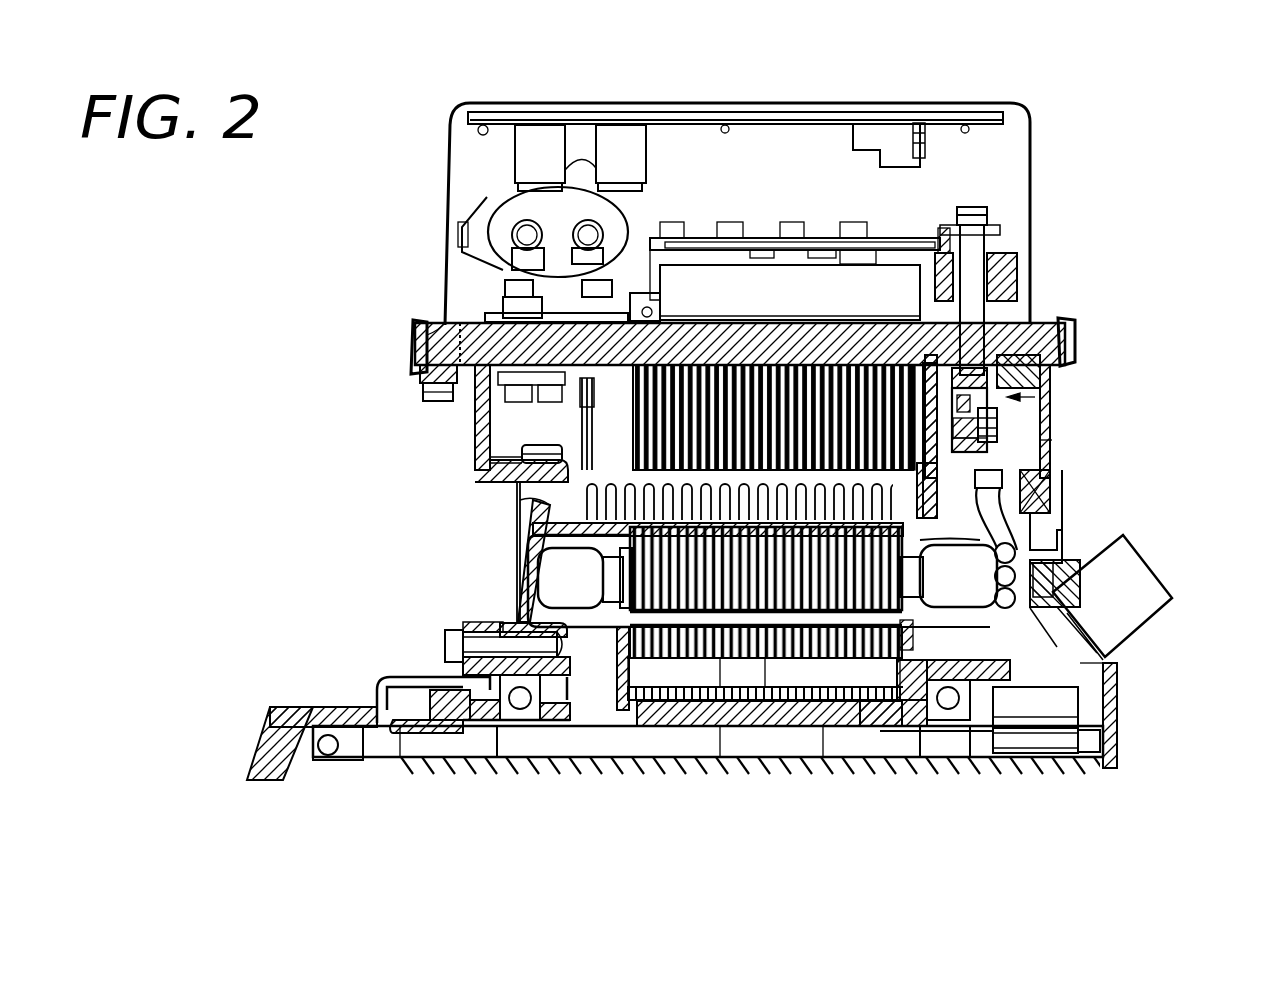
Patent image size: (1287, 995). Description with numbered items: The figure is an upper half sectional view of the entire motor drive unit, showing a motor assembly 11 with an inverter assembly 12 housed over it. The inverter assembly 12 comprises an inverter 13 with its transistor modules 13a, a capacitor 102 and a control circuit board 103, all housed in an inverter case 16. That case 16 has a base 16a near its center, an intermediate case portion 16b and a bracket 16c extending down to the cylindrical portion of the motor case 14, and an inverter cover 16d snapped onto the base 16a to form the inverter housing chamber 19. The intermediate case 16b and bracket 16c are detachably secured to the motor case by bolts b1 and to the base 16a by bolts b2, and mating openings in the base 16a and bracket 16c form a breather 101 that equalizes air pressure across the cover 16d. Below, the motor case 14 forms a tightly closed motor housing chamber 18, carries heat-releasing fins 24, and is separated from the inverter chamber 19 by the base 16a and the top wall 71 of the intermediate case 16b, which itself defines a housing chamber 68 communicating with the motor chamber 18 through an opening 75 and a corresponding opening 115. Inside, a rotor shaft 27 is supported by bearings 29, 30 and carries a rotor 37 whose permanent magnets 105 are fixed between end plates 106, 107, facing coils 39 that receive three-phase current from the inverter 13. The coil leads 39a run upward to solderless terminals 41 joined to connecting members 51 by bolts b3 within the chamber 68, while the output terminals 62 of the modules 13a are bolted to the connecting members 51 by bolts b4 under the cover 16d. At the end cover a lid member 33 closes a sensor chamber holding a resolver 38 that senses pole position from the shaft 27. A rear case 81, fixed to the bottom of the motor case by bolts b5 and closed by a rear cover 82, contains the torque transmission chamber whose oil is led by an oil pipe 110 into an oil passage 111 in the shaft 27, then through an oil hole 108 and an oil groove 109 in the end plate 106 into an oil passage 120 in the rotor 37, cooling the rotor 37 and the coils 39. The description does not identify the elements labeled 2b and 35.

The motor assembly 11 is at (348, 599).
The inverter assembly 12 is at (400, 233).
The inverter 13 is at (707, 220).
The transistor modules 13a is at (812, 280).
The motor case 14 is at (506, 614).
The inverter case 16 is at (1078, 336).
The base 16a is at (1050, 320).
The intermediate case portion 16b is at (1054, 360).
The bracket 16c is at (478, 413).
The inverter cover 16d is at (1034, 245).
The motor housing chamber 18 is at (563, 762).
The inverter housing chamber 19 is at (775, 182).
The fins 24 is at (515, 513).
The rotor shaft 27 is at (765, 758).
The bearing 29 is at (497, 758).
The bearing 30 is at (947, 760).
The lid member 33 is at (1120, 684).
The bolt 35 is at (1080, 708).
The rotor 37 is at (720, 728).
The resolver 38 is at (1128, 540).
The coils 39 is at (1057, 592).
The leads 39a is at (1043, 526).
The solderless terminals 41 is at (1043, 474).
The connecting members 51 is at (1036, 397).
The output terminals 62 is at (932, 220).
The housing chamber 68 is at (1030, 412).
The top wall 71 is at (1068, 318).
The opening 75 is at (1045, 450).
The rear case 81 is at (403, 677).
The rear cover 82 is at (290, 712).
The breather 101 is at (440, 312).
The capacitor 102 is at (580, 160).
The control circuit board 103 is at (775, 108).
The permanent magnets 105 is at (875, 735).
The end plate 106 is at (620, 728).
The end plate 107 is at (903, 766).
The oil hole 108 is at (650, 728).
The oil groove 109 is at (630, 673).
The oil pipe 110 is at (318, 760).
The oil passage 111 is at (823, 750).
The opening 115 is at (1045, 484).
The oil passage 120 is at (837, 617).
The stator 2b is at (585, 427).
The bolts b1 is at (475, 452).
The bolts b2 is at (420, 392).
The bolts b3 is at (1044, 430).
The bolts b4 is at (976, 207).
The bolts b5 is at (448, 630).